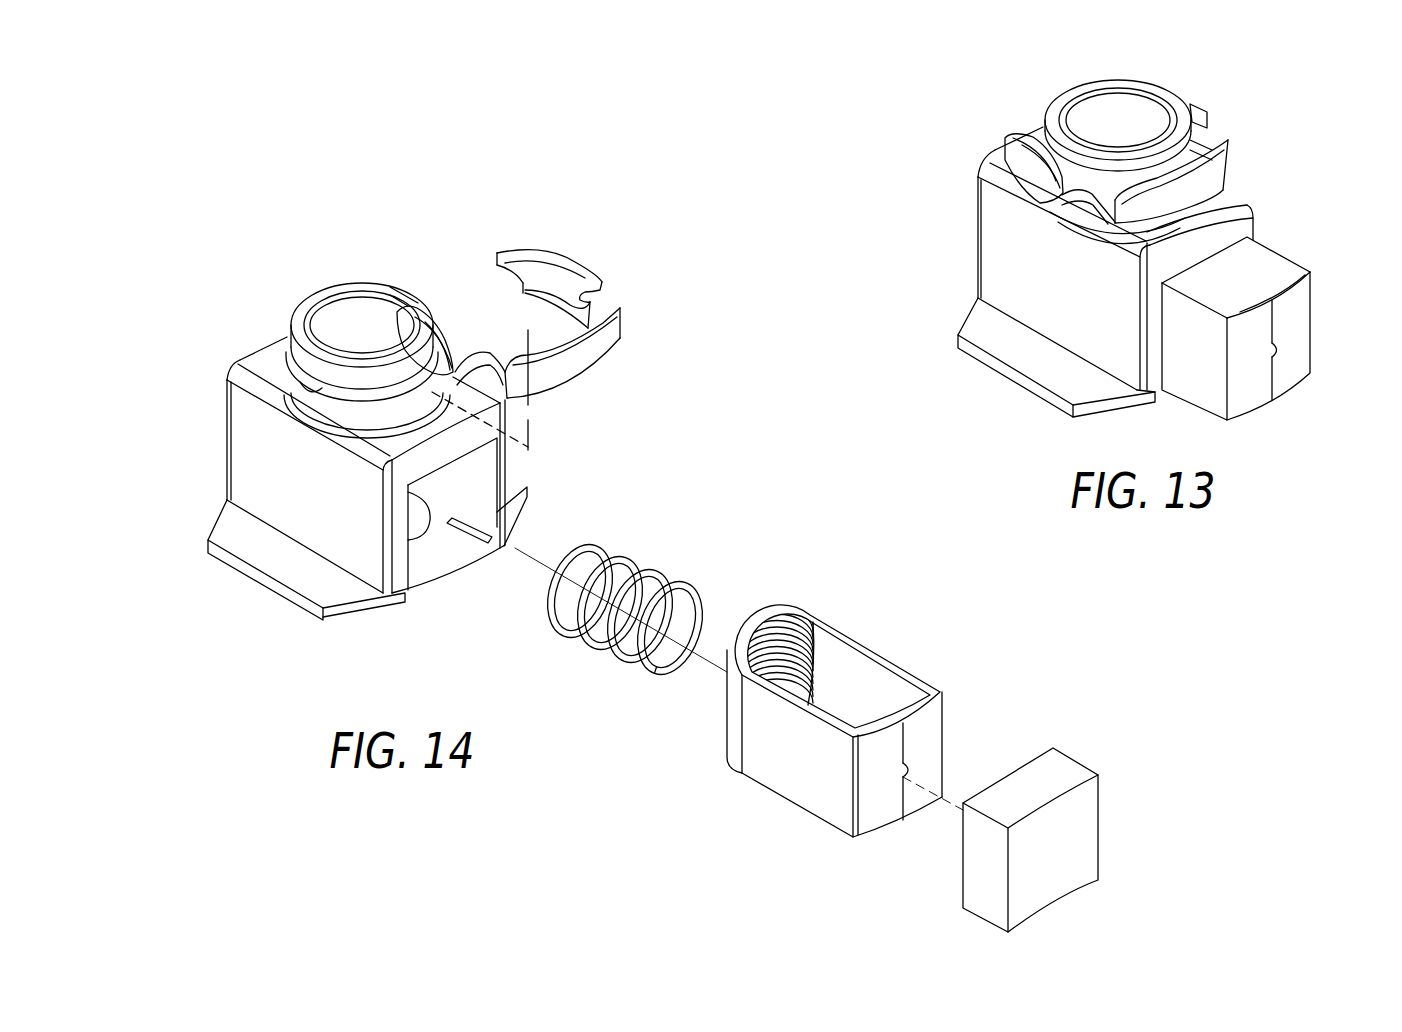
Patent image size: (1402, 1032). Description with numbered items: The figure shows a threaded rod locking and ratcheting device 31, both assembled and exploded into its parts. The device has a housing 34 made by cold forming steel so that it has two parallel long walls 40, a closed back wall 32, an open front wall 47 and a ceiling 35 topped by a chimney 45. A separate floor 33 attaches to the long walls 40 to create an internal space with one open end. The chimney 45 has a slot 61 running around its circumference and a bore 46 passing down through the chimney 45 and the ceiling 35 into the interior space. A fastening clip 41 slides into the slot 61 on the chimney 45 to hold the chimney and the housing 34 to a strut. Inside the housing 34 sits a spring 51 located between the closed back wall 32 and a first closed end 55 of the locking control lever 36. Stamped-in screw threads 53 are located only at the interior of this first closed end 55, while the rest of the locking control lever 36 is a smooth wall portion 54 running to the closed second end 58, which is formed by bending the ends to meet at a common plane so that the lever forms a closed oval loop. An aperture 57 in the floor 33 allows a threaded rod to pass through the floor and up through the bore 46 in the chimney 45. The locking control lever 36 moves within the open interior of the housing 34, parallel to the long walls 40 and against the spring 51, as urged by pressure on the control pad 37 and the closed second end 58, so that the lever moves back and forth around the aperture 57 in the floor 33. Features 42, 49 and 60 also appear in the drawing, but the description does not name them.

In FIG. 13, the threaded rod locking and ratcheting device 31 is at (1322, 138).
In FIG. 14, the threaded rod locking and ratcheting device 31 is at (193, 493).
In FIG. 13, the closed back wall 32 is at (980, 270).
In FIG. 14, the closed back wall 32 is at (227, 427).
In FIG. 13, the floor 33 is at (1013, 383).
In FIG. 14, the floor 33 is at (365, 613).
In FIG. 13, the housing 34 is at (1020, 295).
In FIG. 14, the housing 34 is at (270, 497).
In FIG. 14, the ceiling 35 is at (255, 367).
In FIG. 13, the locking control lever 36 is at (1257, 243).
In FIG. 14, the locking control lever 36 is at (913, 672).
In FIG. 14, the control pad 37 is at (1087, 813).
In FIG. 13, the long walls 40 is at (1232, 198).
In FIG. 14, the long walls 40 is at (243, 420).
In FIG. 13, the fastening clip 41 is at (1228, 155).
In FIG. 14, the fastening clip 41 is at (610, 342).
In FIG. 13, the clip tongue 42 is at (1077, 210).
In FIG. 14, the clip tongue 42 is at (425, 340).
In FIG. 13, the chimney 45 is at (1147, 90).
In FIG. 14, the chimney 45 is at (363, 283).
In FIG. 13, the bore 46 is at (1116, 120).
In FIG. 14, the bore 46 is at (365, 322).
In FIG. 13, the open front wall 47 is at (1162, 388).
In FIG. 14, the open front wall 47 is at (490, 467).
In FIG. 14, the slot 49 is at (485, 537).
In FIG. 14, the spring 51 is at (663, 572).
In FIG. 14, the stamped-in screw threads 53 is at (790, 655).
In FIG. 14, the smooth wall portion 54 is at (890, 677).
In FIG. 14, the first closed end 55 is at (768, 620).
In FIG. 14, the aperture 57 is at (410, 502).
In FIG. 13, the closed second end 58 is at (1298, 307).
In FIG. 14, the closed second end 58 is at (930, 727).
In FIG. 13, the notch 60 is at (1277, 382).
In FIG. 14, the notch 60 is at (902, 802).
In FIG. 14, the slot 61 is at (317, 388).